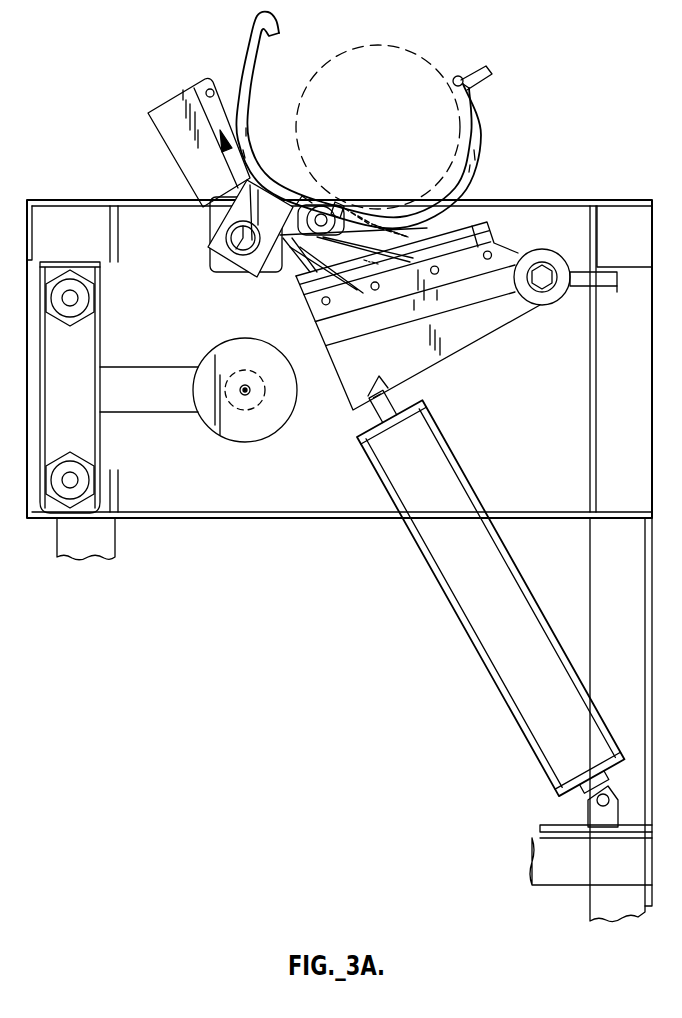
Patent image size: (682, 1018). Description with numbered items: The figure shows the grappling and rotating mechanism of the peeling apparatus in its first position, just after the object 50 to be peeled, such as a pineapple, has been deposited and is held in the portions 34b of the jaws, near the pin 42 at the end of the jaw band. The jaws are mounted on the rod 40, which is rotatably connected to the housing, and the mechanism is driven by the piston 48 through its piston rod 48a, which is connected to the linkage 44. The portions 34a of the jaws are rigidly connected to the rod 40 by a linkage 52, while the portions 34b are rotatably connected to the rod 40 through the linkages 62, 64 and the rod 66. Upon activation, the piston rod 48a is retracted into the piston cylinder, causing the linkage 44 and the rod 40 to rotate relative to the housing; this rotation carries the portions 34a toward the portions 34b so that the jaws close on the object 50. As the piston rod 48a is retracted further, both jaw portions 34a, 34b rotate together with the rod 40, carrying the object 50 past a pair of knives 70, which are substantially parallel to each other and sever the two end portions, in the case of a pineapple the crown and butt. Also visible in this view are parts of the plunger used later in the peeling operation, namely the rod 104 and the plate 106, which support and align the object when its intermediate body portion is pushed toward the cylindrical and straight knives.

The portions of jaws 34a is at (245, 62).
The portions of jaws 34b is at (482, 126).
The object 50 is at (388, 44).
The pin 42 is at (459, 76).
The linkage 44 is at (182, 150).
The linkage 52 is at (238, 212).
The rod 40 is at (217, 264).
The linkage 62 is at (315, 208).
The rod 66 is at (321, 213).
The linkage 64 is at (341, 203).
The knives 70 is at (464, 236).
The piston rod 48a is at (294, 281).
The plate 106 is at (213, 347).
The rod 104 is at (258, 412).
The piston 48 is at (497, 632).